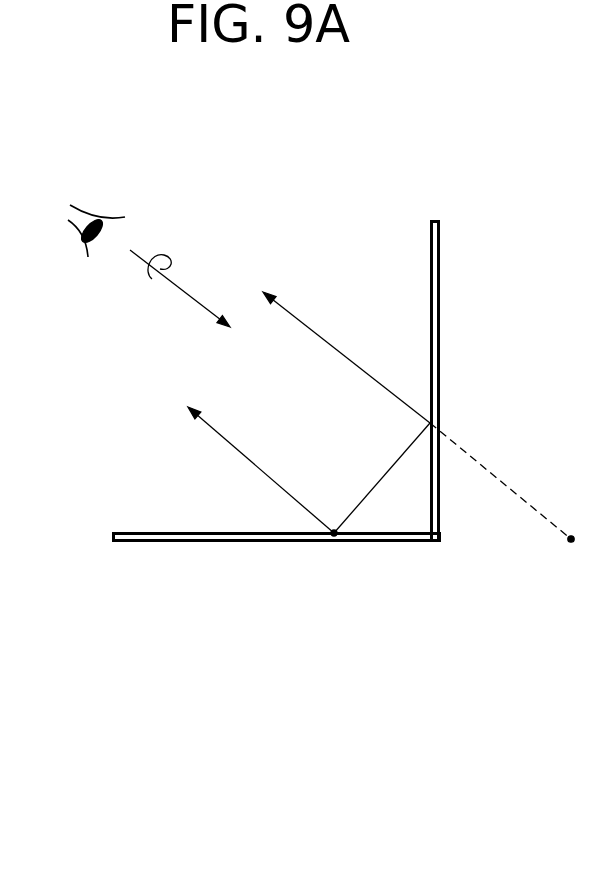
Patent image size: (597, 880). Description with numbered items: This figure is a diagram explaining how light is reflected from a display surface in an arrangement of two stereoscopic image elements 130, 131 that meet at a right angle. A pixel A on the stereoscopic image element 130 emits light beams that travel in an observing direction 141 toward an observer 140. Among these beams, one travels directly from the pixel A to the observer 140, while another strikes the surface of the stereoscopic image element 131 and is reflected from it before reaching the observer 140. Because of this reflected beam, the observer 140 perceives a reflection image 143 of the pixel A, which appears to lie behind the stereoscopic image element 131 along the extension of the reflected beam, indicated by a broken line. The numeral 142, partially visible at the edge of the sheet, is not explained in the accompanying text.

The stereoscopic image element 130 is at (165, 542).
The stereoscopic image element 131 is at (441, 237).
The observer 140 is at (86, 213).
The observing direction 141 is at (152, 279).
The virtual image 142 is at (587, 171).
The reflection image 143 is at (571, 542).
The pixel A is at (333, 542).